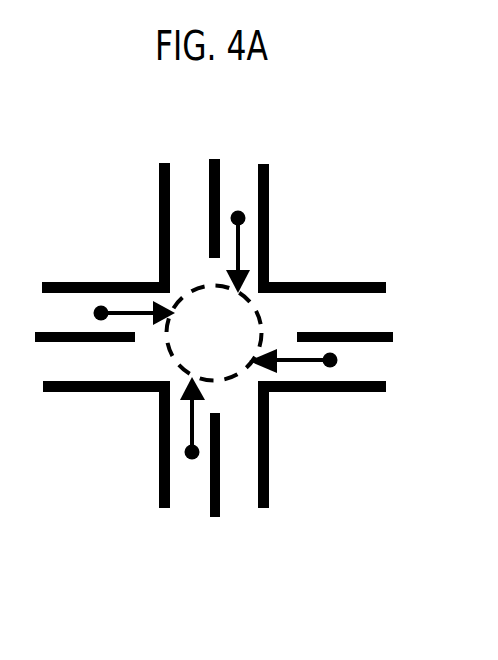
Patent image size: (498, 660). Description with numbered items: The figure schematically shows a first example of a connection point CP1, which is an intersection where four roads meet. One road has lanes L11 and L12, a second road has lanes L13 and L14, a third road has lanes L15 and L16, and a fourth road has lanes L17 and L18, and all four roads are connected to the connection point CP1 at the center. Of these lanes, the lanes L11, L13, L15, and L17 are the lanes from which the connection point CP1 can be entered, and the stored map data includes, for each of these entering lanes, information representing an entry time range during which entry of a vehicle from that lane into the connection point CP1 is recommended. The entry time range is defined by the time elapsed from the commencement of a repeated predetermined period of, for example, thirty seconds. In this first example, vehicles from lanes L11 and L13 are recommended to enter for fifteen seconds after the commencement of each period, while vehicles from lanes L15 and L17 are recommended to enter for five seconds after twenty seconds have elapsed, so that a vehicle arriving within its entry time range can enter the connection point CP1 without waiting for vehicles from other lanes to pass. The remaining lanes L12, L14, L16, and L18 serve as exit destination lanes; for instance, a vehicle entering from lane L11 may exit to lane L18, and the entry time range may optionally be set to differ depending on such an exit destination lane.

The lane L11 is at (192, 503).
The lane L12 is at (248, 503).
The lane L13 is at (240, 173).
The lane L14 is at (183, 173).
The lane L15 is at (48, 302).
The lane L16 is at (62, 372).
The lane L17 is at (375, 372).
The lane L18 is at (362, 302).
The connection point CP1 is at (250, 360).